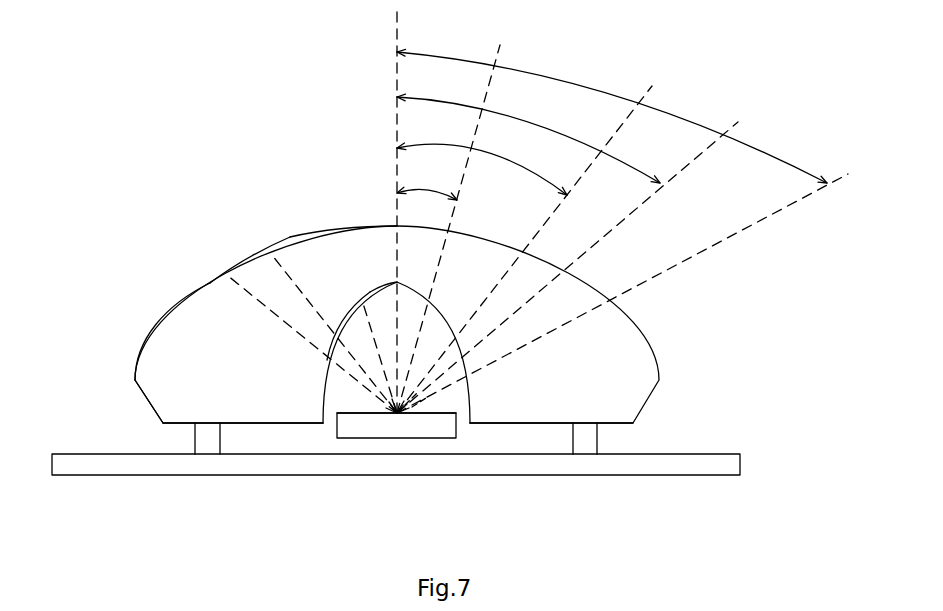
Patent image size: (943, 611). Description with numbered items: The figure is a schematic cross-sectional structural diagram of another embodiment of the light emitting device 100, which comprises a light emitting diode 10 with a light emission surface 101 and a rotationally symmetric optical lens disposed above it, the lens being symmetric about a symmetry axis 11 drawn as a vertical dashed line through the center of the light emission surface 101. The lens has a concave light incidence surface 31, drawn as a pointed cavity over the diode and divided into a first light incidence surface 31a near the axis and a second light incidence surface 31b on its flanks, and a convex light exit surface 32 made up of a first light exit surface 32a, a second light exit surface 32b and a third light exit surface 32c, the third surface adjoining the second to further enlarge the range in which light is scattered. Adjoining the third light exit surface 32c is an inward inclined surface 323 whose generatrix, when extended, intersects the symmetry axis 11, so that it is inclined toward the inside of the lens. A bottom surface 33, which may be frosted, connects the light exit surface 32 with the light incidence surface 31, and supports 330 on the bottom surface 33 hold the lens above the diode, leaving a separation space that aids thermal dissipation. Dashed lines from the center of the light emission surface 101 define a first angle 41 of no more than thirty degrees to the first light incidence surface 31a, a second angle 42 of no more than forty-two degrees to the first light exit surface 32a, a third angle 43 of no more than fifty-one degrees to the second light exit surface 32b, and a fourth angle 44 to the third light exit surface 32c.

The light emitting device 100 is at (209, 83).
The symmetry axis 11 is at (396, 27).
The light emitting diode 10 is at (373, 428).
The light emission surface 101 is at (425, 413).
The light incidence surface 31 is at (357, 158).
The first light incidence surface 31a is at (384, 284).
The second light incidence surface 31b is at (346, 318).
The light exit surface 32 is at (200, 190).
The first light exit surface 32a is at (311, 243).
The second light exit surface 32b is at (248, 261).
The third light exit surface 32c is at (165, 317).
The inclined surface 323 is at (146, 398).
The bottom surface 33 is at (279, 423).
The support 330 is at (203, 437).
The first angle 41 is at (448, 229).
The second angle 42 is at (524, 249).
The third angle 43 is at (567, 253).
The fourth angle 44 is at (622, 231).